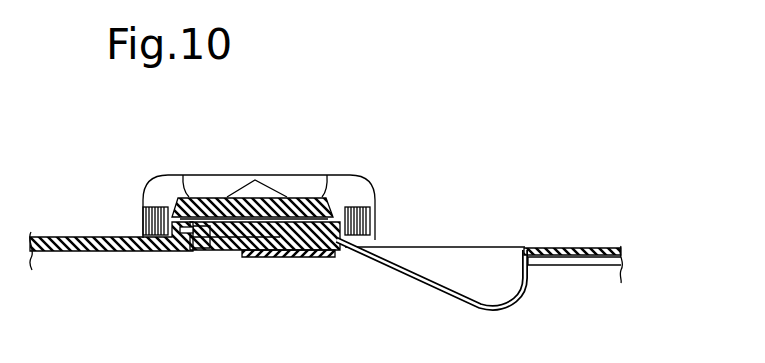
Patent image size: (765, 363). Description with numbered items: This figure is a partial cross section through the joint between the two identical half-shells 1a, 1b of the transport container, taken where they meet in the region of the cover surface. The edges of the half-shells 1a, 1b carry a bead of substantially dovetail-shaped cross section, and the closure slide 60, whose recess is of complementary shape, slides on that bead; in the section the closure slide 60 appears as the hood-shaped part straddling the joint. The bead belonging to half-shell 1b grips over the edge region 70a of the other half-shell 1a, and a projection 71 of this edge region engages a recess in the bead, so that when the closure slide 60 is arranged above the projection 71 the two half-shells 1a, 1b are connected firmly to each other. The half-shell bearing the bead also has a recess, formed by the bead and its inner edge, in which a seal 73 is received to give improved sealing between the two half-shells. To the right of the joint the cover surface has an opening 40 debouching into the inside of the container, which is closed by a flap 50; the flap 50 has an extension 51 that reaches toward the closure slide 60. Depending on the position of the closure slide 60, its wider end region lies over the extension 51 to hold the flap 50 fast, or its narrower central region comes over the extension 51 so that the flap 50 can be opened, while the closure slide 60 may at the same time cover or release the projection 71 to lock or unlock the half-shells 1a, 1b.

The half-shell 1a is at (71, 237).
The half-shell 1b is at (668, 273).
The opening 40 is at (548, 263).
The flap 50 is at (545, 247).
The extension 51 is at (362, 255).
The closure slide 60 is at (353, 190).
The edge region 70a is at (307, 258).
The projection 71 is at (214, 248).
The seal 73 is at (243, 258).